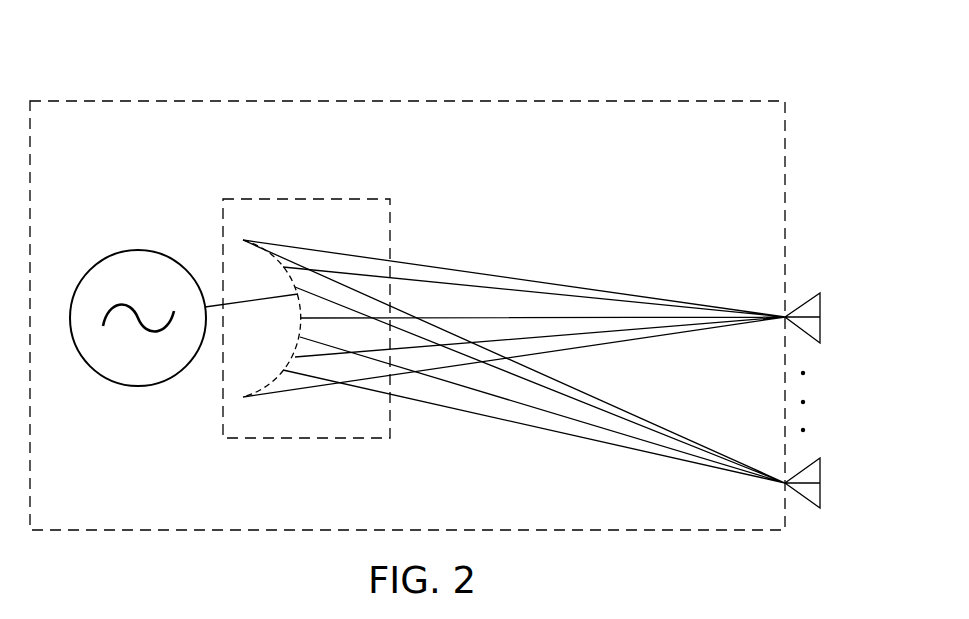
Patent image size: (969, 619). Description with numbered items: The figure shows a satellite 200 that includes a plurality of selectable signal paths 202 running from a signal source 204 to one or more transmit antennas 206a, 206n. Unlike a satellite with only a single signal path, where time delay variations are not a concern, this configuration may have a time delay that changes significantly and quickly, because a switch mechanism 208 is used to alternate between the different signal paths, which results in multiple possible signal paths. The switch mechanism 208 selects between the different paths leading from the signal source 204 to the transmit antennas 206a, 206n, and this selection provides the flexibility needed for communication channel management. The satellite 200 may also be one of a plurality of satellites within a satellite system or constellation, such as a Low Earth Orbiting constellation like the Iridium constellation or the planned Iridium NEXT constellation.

The satellite 200 is at (511, 101).
The selectable signal paths 202 is at (545, 241).
The signal source 204 is at (138, 250).
The transmit antenna 206a is at (820, 302).
The transmit antenna 206n is at (820, 470).
The switch mechanism 208 is at (362, 199).